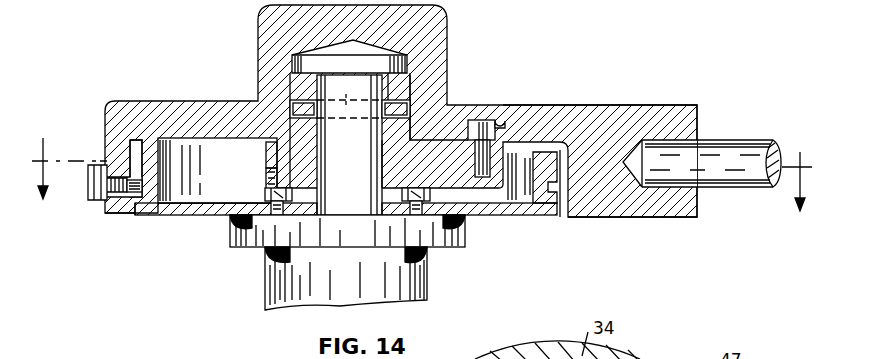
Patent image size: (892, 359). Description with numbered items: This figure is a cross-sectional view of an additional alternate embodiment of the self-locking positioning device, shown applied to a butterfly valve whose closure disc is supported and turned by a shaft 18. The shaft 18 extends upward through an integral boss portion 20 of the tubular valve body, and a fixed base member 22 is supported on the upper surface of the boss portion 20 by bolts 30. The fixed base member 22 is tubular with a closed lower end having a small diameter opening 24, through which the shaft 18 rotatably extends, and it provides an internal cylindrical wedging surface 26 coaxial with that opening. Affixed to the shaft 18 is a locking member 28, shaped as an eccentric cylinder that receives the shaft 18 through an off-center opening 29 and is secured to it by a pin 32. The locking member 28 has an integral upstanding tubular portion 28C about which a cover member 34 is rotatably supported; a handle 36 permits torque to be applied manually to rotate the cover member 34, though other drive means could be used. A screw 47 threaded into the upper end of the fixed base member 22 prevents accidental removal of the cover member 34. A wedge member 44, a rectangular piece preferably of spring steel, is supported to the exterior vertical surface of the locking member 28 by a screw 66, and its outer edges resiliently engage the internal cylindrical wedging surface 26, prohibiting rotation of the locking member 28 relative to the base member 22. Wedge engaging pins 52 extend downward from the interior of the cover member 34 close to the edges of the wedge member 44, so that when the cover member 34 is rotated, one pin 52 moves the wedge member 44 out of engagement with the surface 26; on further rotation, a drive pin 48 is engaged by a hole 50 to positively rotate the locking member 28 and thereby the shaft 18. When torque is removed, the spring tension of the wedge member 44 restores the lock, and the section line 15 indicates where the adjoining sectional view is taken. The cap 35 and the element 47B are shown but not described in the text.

The section line 15 is at (419, 186).
The shaft 18 is at (378, 168).
The boss portion 20 is at (275, 273).
The fixed base member 22 is at (200, 208).
The small diameter opening 24 is at (317, 216).
The internal cylindrical wedging surface 26 is at (156, 146).
The locking member 28 is at (430, 145).
The upstanding tubular portion 28C is at (398, 88).
The off-center opening 29 is at (319, 172).
The bolts 30 is at (402, 193).
The pin 32 is at (305, 112).
The cover member 34 is at (592, 116).
The cap 35 is at (296, 88).
The handle 36 is at (722, 147).
The wedge member 44 is at (266, 180).
The screw 47 is at (97, 200).
The washer 47B is at (135, 193).
The drive pin 48 is at (477, 152).
The hole 50 is at (502, 122).
The wedge engaging pins 52 is at (268, 146).
The screw 66 is at (266, 163).